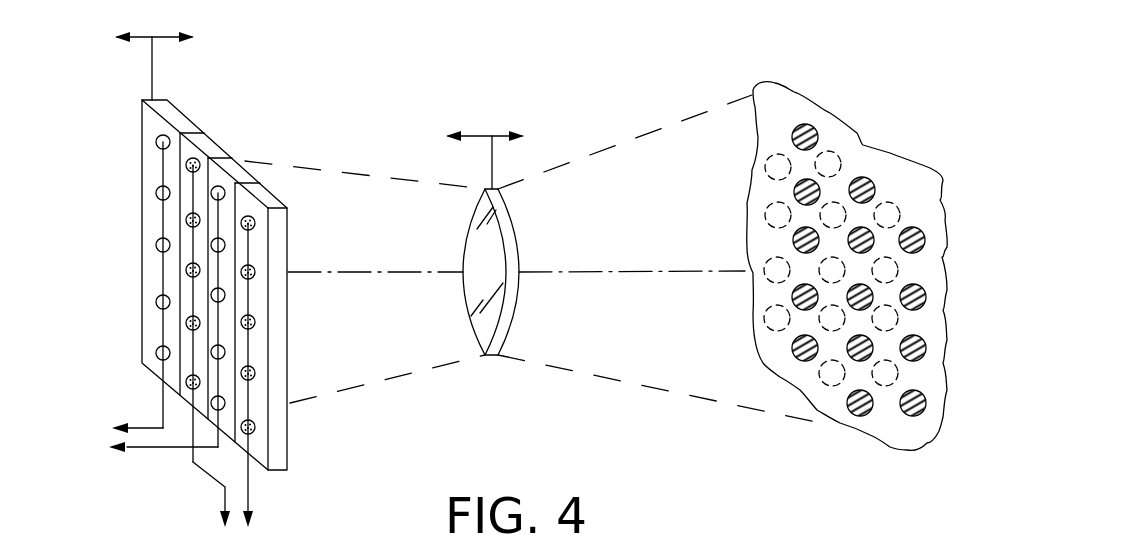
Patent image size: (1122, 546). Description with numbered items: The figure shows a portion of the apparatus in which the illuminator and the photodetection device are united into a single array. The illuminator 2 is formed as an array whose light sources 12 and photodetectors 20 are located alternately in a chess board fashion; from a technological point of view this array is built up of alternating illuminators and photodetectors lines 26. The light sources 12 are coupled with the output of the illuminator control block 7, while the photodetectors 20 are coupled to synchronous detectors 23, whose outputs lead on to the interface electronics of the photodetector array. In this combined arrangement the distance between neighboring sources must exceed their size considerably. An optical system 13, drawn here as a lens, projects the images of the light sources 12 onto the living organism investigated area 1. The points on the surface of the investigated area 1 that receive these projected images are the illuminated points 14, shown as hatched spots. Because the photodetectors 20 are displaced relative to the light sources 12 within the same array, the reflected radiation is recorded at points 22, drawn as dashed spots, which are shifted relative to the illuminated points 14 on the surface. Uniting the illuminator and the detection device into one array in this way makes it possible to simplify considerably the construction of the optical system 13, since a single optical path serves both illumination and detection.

The living organism investigated area 1 is at (927, 277).
The illuminator 2 is at (121, 99).
The illuminator control block 7 is at (153, 438).
The light sources 12 is at (156, 246).
The optical system 13 is at (500, 199).
The illuminated points 14 is at (849, 191).
The photodetectors 20 is at (186, 273).
The recording points 22 is at (843, 160).
The synchronous detectors 23 is at (239, 504).
The alternating illuminators and photodetectors lines 26 is at (214, 148).